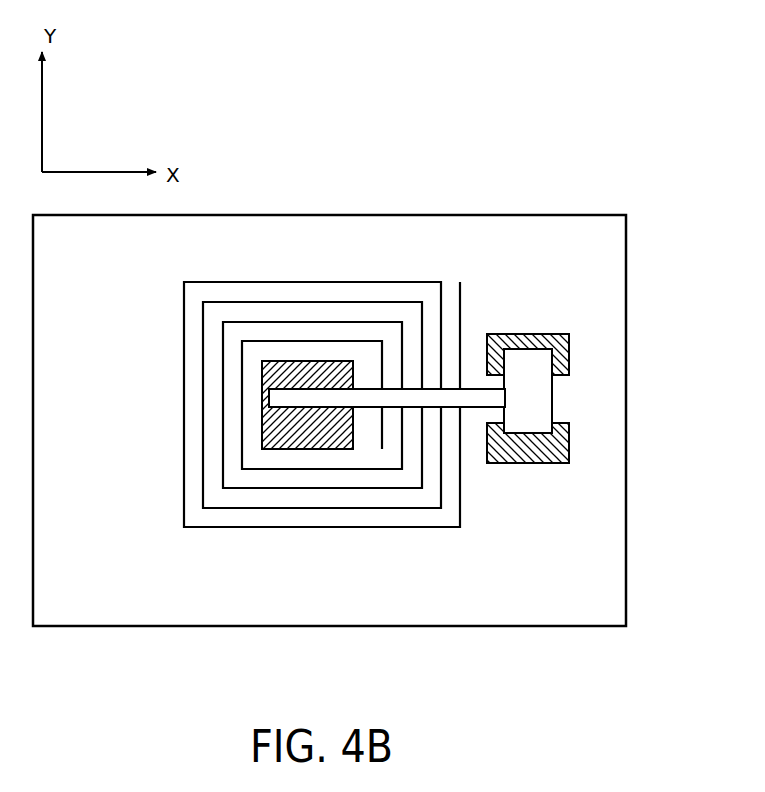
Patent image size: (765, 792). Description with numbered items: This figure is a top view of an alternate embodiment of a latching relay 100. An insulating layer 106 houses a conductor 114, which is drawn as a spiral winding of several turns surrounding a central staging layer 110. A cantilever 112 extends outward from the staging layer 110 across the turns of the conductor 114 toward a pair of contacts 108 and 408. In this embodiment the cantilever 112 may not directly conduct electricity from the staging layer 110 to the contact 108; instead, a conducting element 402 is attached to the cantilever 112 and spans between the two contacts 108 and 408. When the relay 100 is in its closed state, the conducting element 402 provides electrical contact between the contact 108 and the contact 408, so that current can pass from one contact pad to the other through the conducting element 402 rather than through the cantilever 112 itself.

The latching relay 100 is at (584, 155).
The insulating layer 106 is at (601, 255).
The conductor 114 is at (182, 390).
The staging layer 110 is at (290, 450).
The cantilever 112 is at (475, 400).
The contact 408 is at (562, 343).
The conducting element 402 is at (552, 390).
The contact 108 is at (527, 462).